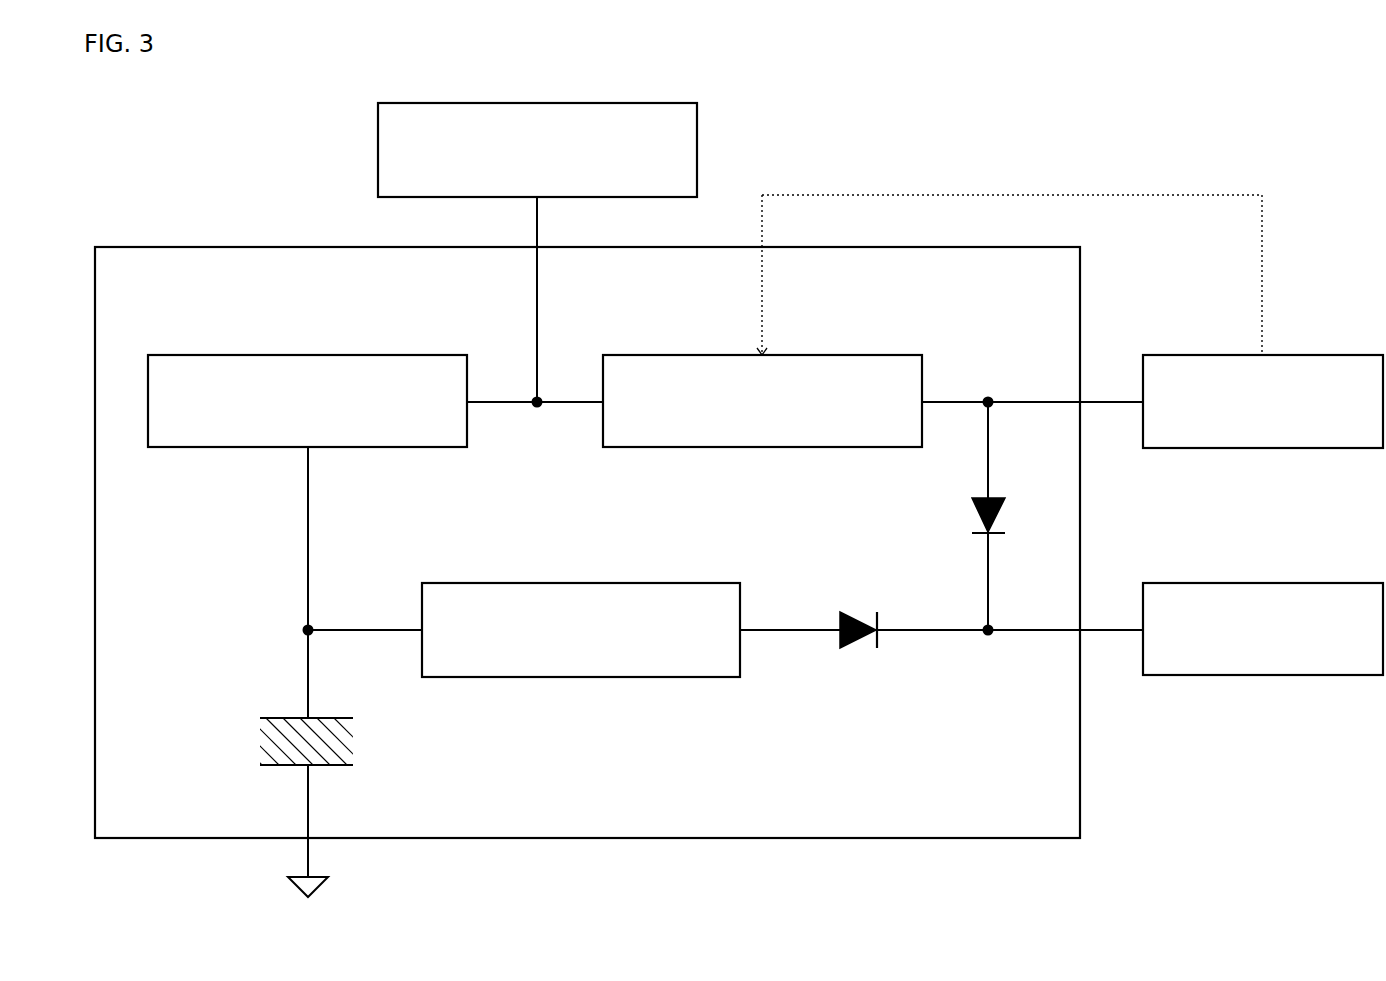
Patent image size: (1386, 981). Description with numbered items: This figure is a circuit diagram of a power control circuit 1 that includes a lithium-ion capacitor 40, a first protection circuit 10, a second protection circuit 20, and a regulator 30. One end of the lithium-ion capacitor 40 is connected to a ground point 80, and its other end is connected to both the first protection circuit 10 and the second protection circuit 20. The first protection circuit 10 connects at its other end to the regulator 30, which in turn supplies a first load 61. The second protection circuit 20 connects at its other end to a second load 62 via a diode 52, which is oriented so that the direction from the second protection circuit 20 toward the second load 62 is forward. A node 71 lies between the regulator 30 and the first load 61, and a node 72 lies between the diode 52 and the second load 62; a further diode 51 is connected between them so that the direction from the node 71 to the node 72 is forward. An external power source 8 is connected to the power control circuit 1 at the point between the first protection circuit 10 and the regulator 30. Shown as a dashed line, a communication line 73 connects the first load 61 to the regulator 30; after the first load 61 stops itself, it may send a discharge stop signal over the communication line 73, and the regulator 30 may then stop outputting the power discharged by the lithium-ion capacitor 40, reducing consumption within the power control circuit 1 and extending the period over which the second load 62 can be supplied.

The power control circuit 1 is at (183, 247).
The external power source 8 is at (697, 147).
The first protection circuit 10 is at (220, 355).
The second protection circuit 20 is at (612, 583).
The regulator 30 is at (852, 355).
The lithium-ion capacitor 40 is at (262, 742).
The diode 51 is at (975, 516).
The diode 52 is at (860, 648).
The first load 61 is at (1308, 355).
The second load 62 is at (1308, 583).
The node 71 is at (992, 398).
The node 72 is at (990, 642).
The communication line 73 is at (1015, 195).
The ground point 80 is at (318, 893).